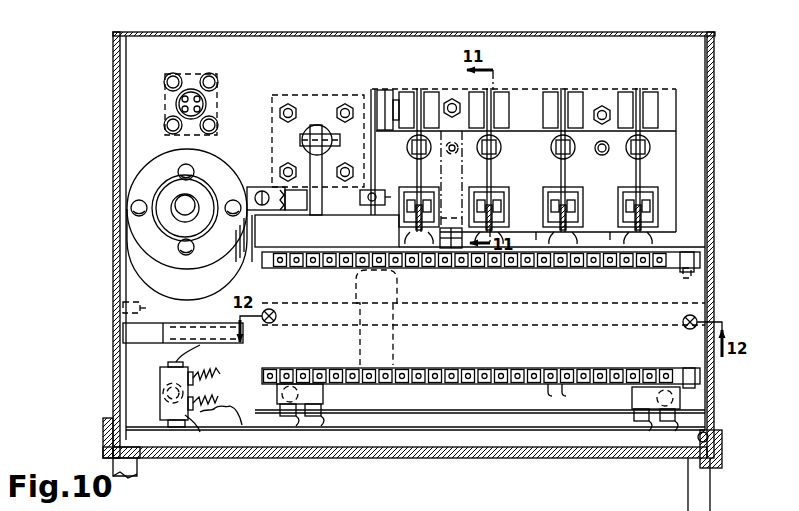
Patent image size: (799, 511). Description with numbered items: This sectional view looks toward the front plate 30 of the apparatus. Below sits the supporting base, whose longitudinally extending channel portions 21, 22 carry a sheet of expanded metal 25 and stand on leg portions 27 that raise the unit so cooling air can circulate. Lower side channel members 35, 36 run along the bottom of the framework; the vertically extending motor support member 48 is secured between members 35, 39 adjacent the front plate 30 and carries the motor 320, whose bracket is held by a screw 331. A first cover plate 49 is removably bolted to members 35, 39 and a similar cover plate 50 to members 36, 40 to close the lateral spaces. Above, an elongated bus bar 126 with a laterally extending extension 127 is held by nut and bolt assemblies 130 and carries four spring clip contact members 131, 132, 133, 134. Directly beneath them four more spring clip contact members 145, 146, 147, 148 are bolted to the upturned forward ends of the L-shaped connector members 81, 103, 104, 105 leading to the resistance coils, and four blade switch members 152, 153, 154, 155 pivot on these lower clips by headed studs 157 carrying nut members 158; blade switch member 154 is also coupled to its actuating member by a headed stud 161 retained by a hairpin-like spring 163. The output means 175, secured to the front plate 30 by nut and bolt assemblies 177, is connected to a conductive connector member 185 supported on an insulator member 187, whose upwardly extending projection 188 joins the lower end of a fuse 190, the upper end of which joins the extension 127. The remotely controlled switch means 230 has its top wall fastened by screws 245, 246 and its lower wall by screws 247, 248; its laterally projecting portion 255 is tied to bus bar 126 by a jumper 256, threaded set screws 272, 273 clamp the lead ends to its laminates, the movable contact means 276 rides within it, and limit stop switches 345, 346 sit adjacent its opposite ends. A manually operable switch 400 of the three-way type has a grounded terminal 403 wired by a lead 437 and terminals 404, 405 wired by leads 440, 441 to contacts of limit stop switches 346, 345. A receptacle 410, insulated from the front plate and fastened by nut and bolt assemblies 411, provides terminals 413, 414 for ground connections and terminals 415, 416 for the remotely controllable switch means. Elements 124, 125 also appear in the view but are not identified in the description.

The longitudinally extending channel portion 21 is at (108, 424).
The longitudinally extending channel portion 22 is at (715, 465).
The sheet of expanded metal 25 is at (195, 458).
The leg portion 27 is at (138, 474).
The front plate 30 is at (617, 46).
The lower side channel member 35 is at (125, 430).
The lower side channel member 36 is at (700, 432).
The framework member 39 is at (116, 46).
The framework member 40 is at (716, 34).
The motor support member 48 is at (126, 127).
The first cover plate 49 is at (126, 238).
The cover plate 50 is at (714, 196).
The connector member 81 is at (634, 228).
The connector member 103 is at (572, 226).
The connector member 104 is at (502, 224).
The connector member 105 is at (425, 215).
The relay contact box 124 is at (580, 200).
The pivot pin 125 is at (452, 156).
The bus bar 126 is at (540, 92).
The laterally extending extension 127 is at (390, 96).
The nut and bolt assemblies 130 is at (606, 108).
The spring clip contact member 131 is at (656, 92).
The spring clip contact member 132 is at (575, 98).
The spring clip contact member 133 is at (538, 92).
The spring clip contact member 134 is at (432, 100).
The spring clip contact member 145 is at (642, 198).
The spring clip contact member 146 is at (562, 192).
The spring clip contact member 147 is at (505, 195).
The spring clip contact member 148 is at (406, 196).
The blade switch member 152 is at (640, 166).
The blade switch member 153 is at (602, 152).
The blade switch member 154 is at (490, 158).
The blade switch member 155 is at (408, 148).
The headed studs 157 is at (505, 205).
The nut members 158 is at (545, 197).
The headed stud 161 is at (493, 145).
The hairpin-like spring 163 is at (489, 150).
The output means 175 is at (300, 93).
The nut and bolt assemblies 177 is at (288, 104).
The connector member 185 is at (338, 208).
The insulator member 187 is at (262, 187).
The upwardly extending projection 188 is at (370, 190).
The fuse 190 is at (372, 130).
The remotely controlled switch means 230 is at (442, 378).
The screw 245 is at (272, 270).
The screw 246 is at (705, 282).
The screw 247 is at (265, 368).
The screw 248 is at (703, 378).
The laterally extending projecting portion 255 is at (454, 262).
The jumper 256 is at (457, 262).
The threaded set screw 272 is at (652, 260).
The threaded set screw 273 is at (539, 396).
The movable contact means 276 is at (398, 353).
The motor 320 is at (135, 265).
The screw 331 is at (125, 332).
The limit stop switch 345 is at (630, 408).
The limit stop switch 346 is at (325, 395).
The manually operable switch 400 is at (160, 383).
The terminal 403 is at (175, 364).
The terminal 404 is at (194, 381).
The terminal 405 is at (206, 428).
The receptacle 410 is at (207, 52).
The nut and bolt assemblies 411 is at (166, 125).
The terminal 413 is at (187, 98).
The terminal 414 is at (200, 109).
The terminal 415 is at (188, 112).
The terminal 416 is at (200, 99).
The lead 437 is at (196, 345).
The lead 440 is at (217, 364).
The lead 441 is at (234, 420).